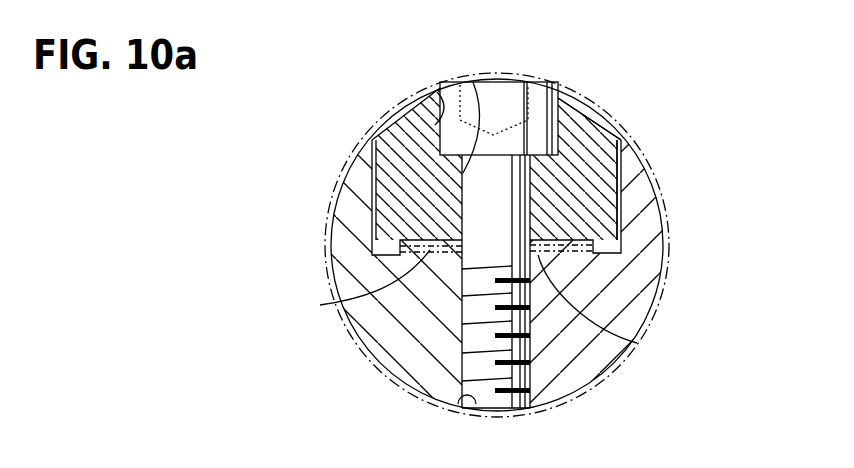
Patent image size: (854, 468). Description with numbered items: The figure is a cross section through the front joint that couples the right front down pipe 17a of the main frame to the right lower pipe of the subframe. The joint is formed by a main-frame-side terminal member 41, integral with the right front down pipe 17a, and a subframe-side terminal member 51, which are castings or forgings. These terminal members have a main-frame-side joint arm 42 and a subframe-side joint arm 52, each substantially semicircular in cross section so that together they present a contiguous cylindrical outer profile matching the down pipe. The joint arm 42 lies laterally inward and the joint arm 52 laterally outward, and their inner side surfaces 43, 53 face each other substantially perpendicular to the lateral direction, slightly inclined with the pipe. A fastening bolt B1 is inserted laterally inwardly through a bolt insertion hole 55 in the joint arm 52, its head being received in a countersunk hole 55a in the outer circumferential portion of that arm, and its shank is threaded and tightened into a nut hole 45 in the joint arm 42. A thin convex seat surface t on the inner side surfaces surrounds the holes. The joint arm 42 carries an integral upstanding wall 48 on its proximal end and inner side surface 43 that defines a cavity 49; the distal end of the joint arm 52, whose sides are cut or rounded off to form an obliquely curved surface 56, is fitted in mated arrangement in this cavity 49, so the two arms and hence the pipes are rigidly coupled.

The bolt insertion hole 55 is at (480, 98).
The countersunk hole 55a is at (437, 90).
The fastening bolt B1 is at (507, 92).
The subframe-side joint arm 52 is at (593, 125).
The subframe-side terminal member 51 is at (589, 169).
The cavity 49 is at (593, 172).
The obliquely curved surface 56 is at (372, 162).
The upstanding wall 48 is at (360, 203).
The inner side surface 43 is at (440, 225).
The right front down pipe 17a is at (677, 263).
The inner side surface 53 is at (587, 270).
The main-frame-side joint arm 42 is at (558, 385).
The main-frame-side terminal member 41 is at (497, 245).
The nut hole 45 is at (475, 402).
The thin convex seat surface t is at (320, 305).